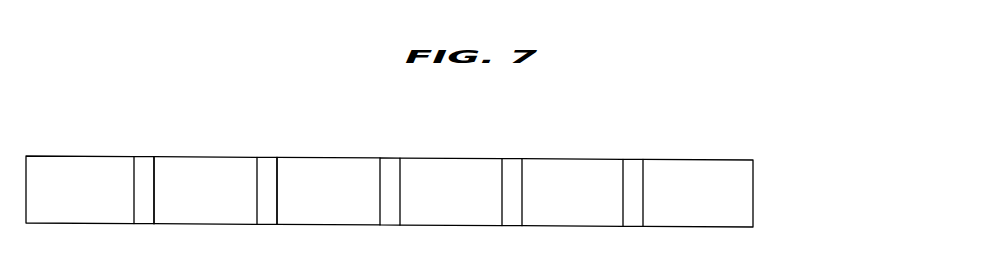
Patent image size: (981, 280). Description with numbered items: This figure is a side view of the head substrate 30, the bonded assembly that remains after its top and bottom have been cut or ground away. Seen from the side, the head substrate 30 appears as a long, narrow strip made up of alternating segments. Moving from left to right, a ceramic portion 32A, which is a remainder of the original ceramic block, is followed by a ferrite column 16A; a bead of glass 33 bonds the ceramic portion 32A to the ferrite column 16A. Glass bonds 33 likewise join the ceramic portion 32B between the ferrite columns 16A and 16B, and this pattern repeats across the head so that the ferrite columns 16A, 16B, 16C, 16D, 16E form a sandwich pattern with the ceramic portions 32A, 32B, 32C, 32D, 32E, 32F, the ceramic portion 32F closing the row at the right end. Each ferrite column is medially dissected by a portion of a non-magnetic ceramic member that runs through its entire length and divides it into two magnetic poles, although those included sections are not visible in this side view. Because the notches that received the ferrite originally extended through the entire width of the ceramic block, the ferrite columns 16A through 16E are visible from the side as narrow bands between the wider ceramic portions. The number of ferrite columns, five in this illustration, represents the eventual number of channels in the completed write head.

The head substrate 30 is at (783, 184).
The ceramic portion 32A is at (100, 207).
The ceramic portion 32B is at (223, 207).
The ceramic portion 32C is at (347, 207).
The ceramic portion 32D is at (470, 207).
The ceramic portion 32E is at (593, 207).
The ceramic portion 32F is at (717, 210).
The ferrite column 16A is at (146, 164).
The ferrite column 16B is at (269, 164).
The ferrite column 16C is at (391, 164).
The ferrite column 16D is at (511, 164).
The ferrite column 16E is at (631, 165).
The bead of glass 33 is at (158, 181).